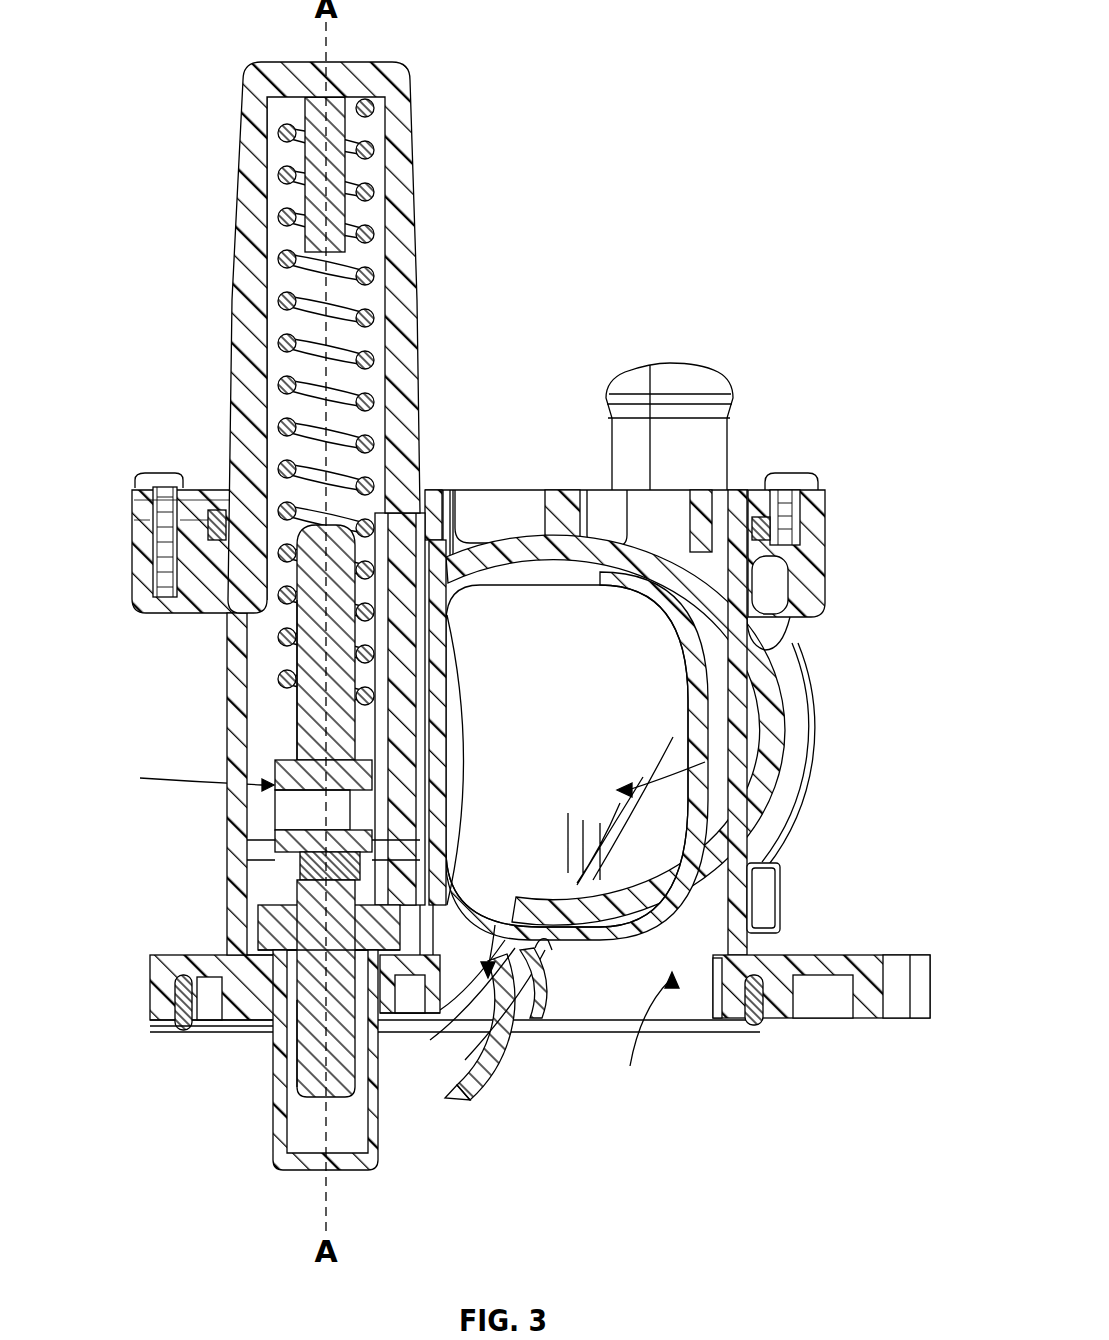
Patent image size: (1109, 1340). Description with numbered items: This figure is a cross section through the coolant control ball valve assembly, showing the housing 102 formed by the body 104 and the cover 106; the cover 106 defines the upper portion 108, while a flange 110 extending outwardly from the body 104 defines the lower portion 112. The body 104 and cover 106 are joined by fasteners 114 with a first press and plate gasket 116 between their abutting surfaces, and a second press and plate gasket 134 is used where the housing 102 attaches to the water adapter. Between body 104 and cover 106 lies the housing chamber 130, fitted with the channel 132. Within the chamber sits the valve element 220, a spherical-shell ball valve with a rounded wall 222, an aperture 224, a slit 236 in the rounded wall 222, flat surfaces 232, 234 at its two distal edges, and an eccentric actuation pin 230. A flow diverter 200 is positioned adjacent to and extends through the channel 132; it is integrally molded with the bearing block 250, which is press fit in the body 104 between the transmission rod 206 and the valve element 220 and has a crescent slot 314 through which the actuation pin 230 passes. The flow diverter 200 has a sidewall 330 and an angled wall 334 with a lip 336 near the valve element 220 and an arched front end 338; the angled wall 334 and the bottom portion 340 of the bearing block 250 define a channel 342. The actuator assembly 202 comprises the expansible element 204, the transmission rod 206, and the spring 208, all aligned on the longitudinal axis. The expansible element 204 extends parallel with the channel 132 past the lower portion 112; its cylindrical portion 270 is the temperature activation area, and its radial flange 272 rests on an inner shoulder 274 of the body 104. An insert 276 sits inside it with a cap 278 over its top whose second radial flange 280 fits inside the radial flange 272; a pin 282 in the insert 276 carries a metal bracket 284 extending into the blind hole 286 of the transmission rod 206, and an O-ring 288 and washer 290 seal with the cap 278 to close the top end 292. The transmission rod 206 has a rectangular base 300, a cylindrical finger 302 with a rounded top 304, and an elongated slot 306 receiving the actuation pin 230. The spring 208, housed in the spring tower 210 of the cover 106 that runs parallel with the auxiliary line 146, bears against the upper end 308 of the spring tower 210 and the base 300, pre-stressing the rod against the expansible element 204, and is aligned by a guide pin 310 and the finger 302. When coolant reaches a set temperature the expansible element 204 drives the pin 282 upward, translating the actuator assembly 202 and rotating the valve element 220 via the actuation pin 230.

The housing 102 is at (180, 778).
The body 104 is at (227, 717).
The cover 106 is at (570, 490).
The upper portion 108 is at (742, 486).
The flange 110 is at (150, 998).
The lower portion 112 is at (922, 1018).
The fasteners 114 is at (150, 476).
The first press and plate gasket 116 is at (215, 512).
The housing chamber 130 is at (640, 1035).
The channel 132 is at (707, 1003).
The second press and plate gasket 134 is at (180, 1030).
The auxiliary line 146 is at (732, 392).
The flow diverter 200 is at (510, 1045).
The actuator assembly 202 is at (262, 760).
The expansible element 204 is at (280, 1122).
The transmission rod 206 is at (330, 630).
The spring 208 is at (370, 150).
The spring tower 210 is at (418, 265).
The valve element 220 is at (772, 648).
The rounded wall 222 is at (680, 683).
The aperture 224 is at (647, 730).
The actuation pin 230 is at (268, 812).
The flat surface 232 is at (453, 557).
The flat surface 234 is at (700, 790).
The slit 236 is at (577, 893).
The bearing block 250 is at (400, 530).
The cylindrical portion 270 is at (275, 1060).
The radial flange 272 is at (280, 948).
The inner shoulder 274 is at (540, 1003).
The insert 276 is at (290, 918).
The cap 278 is at (385, 1020).
The second radial flange 280 is at (383, 965).
The pin 282 is at (265, 975).
The bracket 284 is at (305, 838).
The blind hole 286 is at (443, 837).
The O-ring 288 is at (283, 1095).
The washer 290 is at (405, 865).
The top end 292 is at (300, 868).
The base 300 is at (447, 713).
The finger 302 is at (318, 568).
The rounded top 304 is at (317, 528).
The elongated slot 306 is at (345, 755).
The upper end 308 is at (352, 62).
The guide pin 310 is at (317, 190).
The slot 314 is at (420, 752).
The sidewall 330 is at (500, 1080).
The angled wall 334 is at (523, 1037).
The lip 336 is at (547, 943).
The front end 338 is at (453, 1097).
The bottom portion 340 is at (452, 1000).
The channel 342 is at (498, 1000).